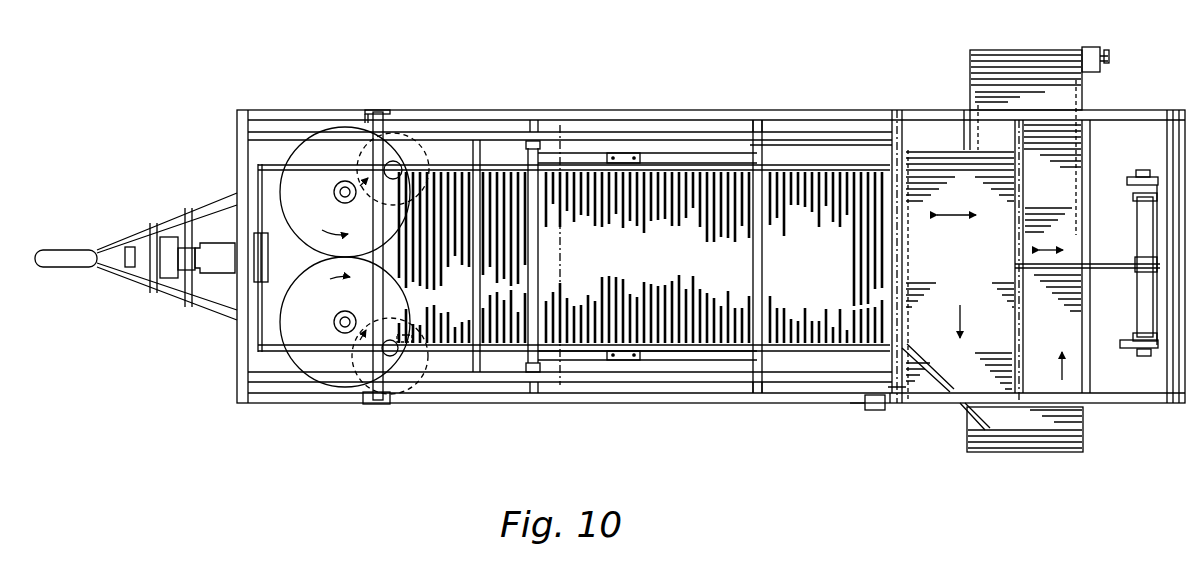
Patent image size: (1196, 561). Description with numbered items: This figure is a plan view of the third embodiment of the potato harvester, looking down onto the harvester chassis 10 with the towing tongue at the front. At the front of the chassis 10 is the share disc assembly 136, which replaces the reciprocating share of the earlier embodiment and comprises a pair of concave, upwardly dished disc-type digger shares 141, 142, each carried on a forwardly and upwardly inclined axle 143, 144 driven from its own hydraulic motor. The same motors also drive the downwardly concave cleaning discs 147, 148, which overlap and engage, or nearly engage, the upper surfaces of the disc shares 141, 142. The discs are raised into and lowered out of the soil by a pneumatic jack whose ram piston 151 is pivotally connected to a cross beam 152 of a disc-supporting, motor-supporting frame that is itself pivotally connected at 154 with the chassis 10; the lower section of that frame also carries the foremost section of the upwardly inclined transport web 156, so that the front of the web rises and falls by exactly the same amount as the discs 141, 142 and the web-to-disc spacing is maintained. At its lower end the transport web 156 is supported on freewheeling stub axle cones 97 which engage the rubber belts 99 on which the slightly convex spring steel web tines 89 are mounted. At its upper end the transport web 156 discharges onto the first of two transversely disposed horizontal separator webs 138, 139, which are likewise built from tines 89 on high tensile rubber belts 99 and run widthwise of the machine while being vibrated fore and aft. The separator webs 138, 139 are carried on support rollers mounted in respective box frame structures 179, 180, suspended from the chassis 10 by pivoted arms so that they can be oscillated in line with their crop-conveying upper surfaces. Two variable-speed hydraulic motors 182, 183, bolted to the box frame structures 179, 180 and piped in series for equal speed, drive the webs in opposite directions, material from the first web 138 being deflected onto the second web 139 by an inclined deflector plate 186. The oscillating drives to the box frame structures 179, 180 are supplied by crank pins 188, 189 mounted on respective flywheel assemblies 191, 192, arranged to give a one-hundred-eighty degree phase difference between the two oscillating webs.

The harvester chassis 10 is at (247, 404).
The web tines 89 is at (548, 296).
The freewheeling stub axle cones 97 is at (385, 213).
The rubber belts 99 is at (972, 78).
The disc assembly 136 is at (272, 320).
The first separator web 138 is at (977, 257).
The second separator web 139 is at (1067, 196).
The disc-type digger share 141 is at (313, 363).
The disc-type digger share 142 is at (307, 157).
The axle 143 is at (338, 314).
The axle 144 is at (334, 192).
The cleaning disc 147 is at (400, 368).
The cleaning disc 148 is at (412, 143).
The ram piston 151 is at (378, 110).
The cross beam 152 is at (372, 366).
The pivot connection 154 is at (566, 369).
The transport web 156 is at (632, 264).
The box frame structure 179 is at (896, 405).
The box frame structure 180 is at (965, 440).
The variable-speed hydraulic motor 182 is at (876, 412).
The variable-speed hydraulic motor 183 is at (1088, 47).
The inclined deflector plate 186 is at (947, 373).
The crank pin 188 is at (1112, 270).
The crank pin 189 is at (1087, 266).
The flywheel assembly 191 is at (1122, 181).
The flywheel assembly 192 is at (1124, 349).